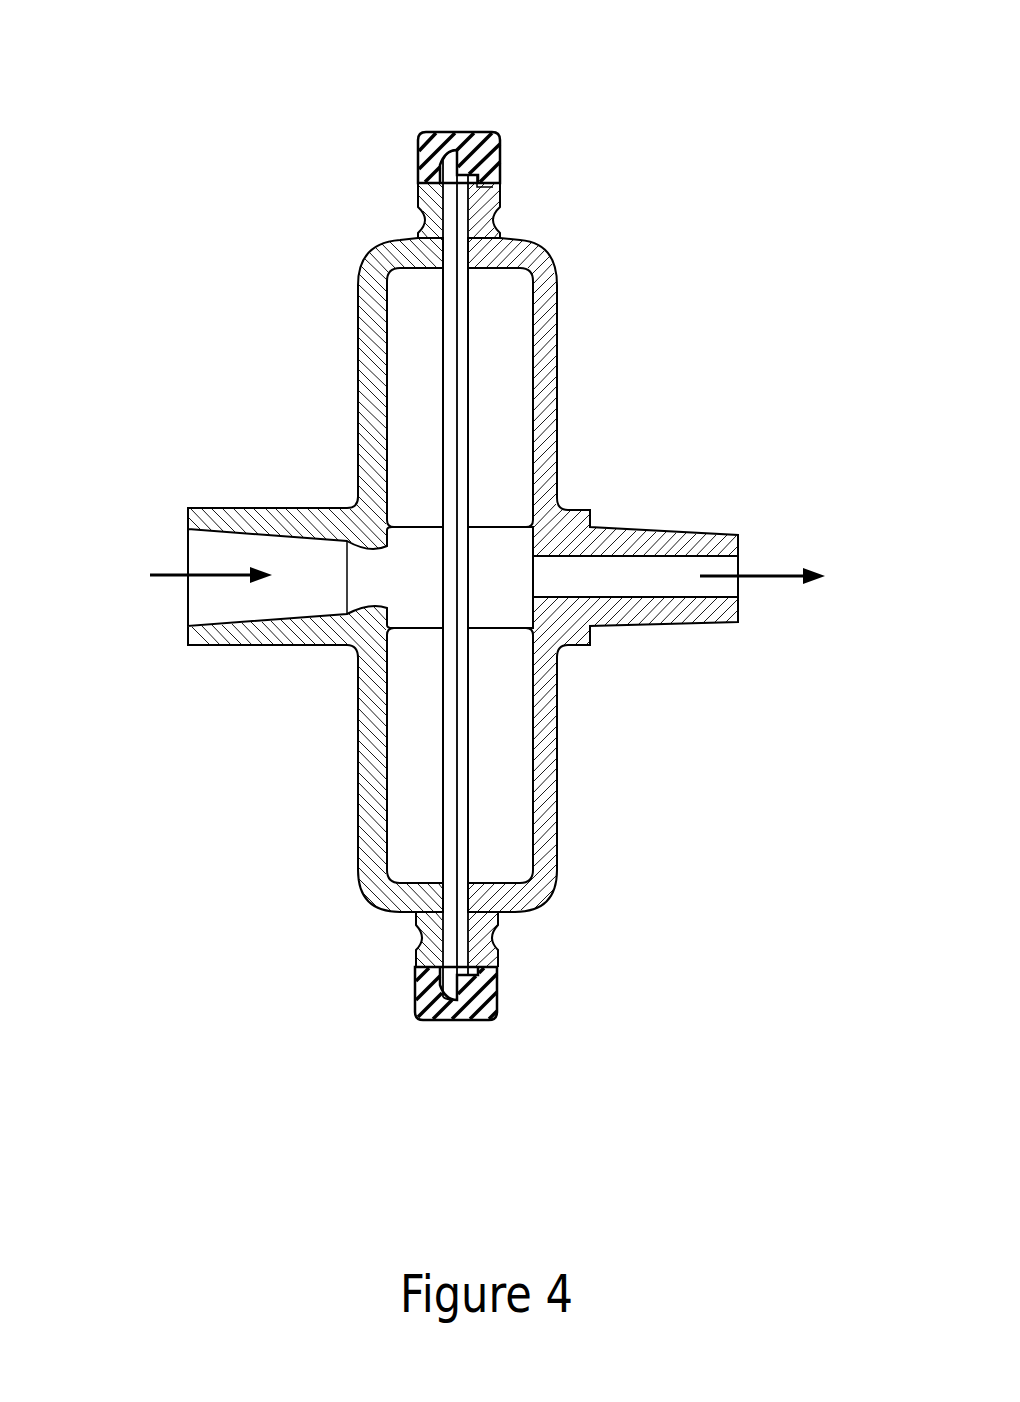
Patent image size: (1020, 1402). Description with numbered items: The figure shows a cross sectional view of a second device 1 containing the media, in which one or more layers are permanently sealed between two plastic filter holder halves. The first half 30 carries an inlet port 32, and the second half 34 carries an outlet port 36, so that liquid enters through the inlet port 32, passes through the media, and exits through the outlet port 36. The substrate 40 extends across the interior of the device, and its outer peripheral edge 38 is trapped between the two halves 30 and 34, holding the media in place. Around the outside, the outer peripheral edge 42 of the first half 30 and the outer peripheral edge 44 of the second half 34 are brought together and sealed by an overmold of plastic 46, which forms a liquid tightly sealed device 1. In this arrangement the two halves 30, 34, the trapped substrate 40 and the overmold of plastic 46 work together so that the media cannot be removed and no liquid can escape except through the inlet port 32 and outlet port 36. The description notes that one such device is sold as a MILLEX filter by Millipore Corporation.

The filter device 1 is at (362, 150).
The first half 30 is at (358, 393).
The inlet port 32 is at (246, 611).
The second half 34 is at (558, 747).
The outlet port 36 is at (730, 583).
The outer peripheral edge of the substrate 38 is at (457, 210).
The substrate 40 is at (455, 325).
The outer peripheral edge of the first half 42 is at (430, 932).
The outer peripheral edge of the second half 44 is at (473, 921).
The overmold of plastic 46 is at (457, 132).